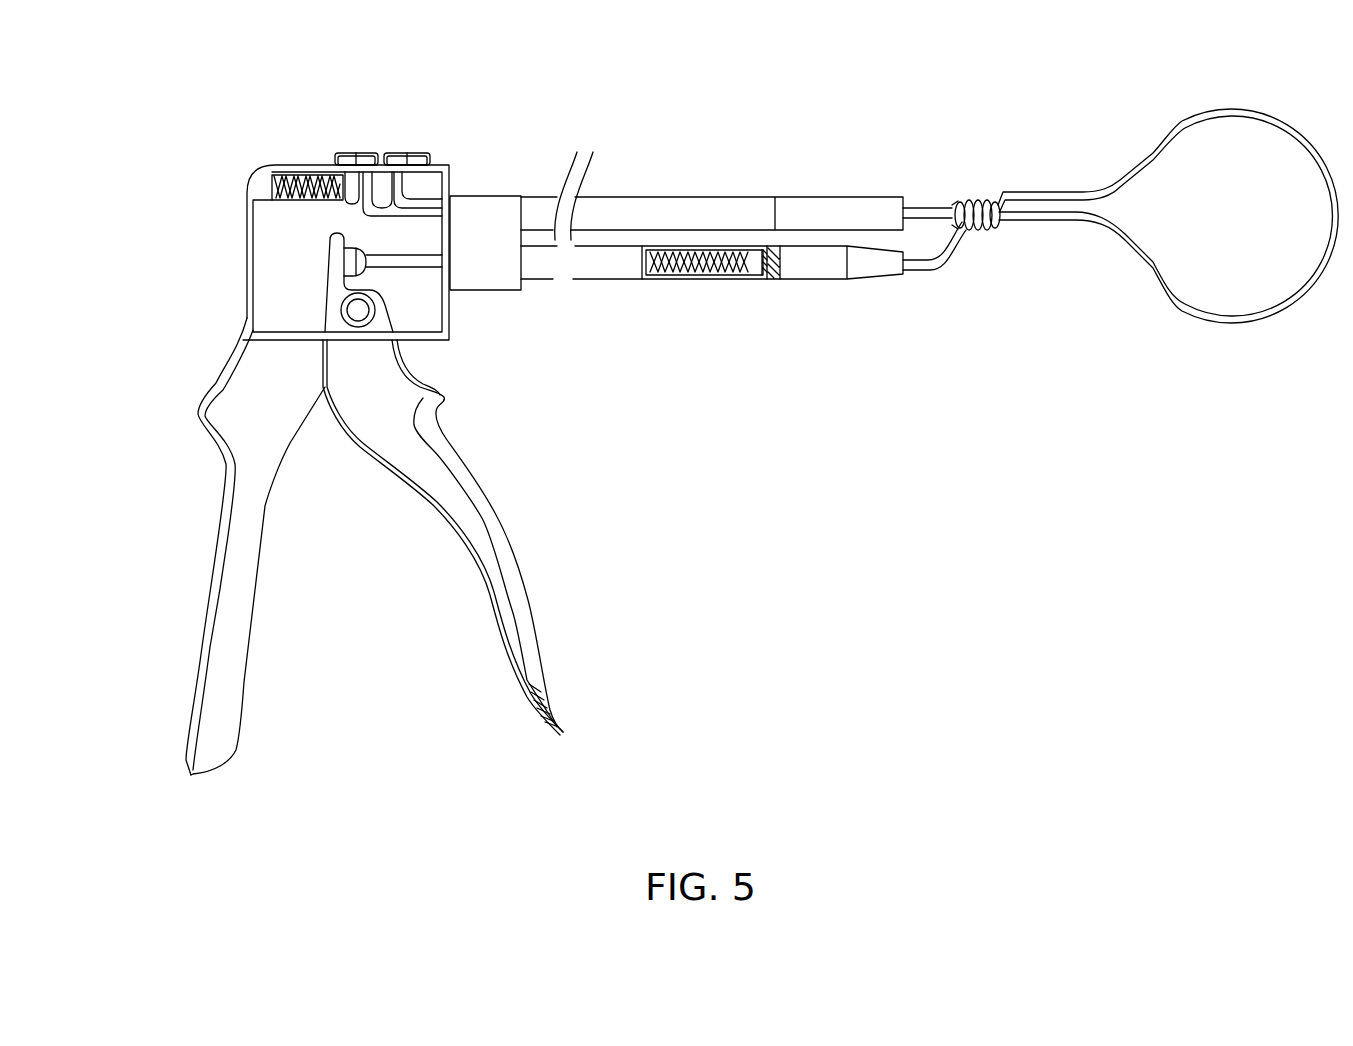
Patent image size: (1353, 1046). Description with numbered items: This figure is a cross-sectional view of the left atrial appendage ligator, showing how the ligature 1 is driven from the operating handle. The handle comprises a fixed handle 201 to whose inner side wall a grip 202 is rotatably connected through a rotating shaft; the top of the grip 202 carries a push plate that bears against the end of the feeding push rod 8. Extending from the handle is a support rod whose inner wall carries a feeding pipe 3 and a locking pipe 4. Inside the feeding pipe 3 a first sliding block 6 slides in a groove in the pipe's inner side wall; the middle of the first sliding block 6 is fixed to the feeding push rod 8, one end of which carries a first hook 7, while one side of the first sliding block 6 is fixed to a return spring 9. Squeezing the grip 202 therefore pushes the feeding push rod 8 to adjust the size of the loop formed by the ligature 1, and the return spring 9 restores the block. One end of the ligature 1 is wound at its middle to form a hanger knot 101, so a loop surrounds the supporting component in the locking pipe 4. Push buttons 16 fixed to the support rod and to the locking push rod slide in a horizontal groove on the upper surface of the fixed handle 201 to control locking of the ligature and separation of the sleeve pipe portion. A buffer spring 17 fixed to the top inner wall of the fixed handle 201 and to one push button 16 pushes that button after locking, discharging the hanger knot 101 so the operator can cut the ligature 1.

The ligature 1 is at (1113, 220).
The feeding pipe 3 is at (826, 265).
The locking pipe 4 is at (683, 208).
The first sliding block 6 is at (762, 263).
The first hook 7 is at (776, 262).
The feeding push rod 8 is at (700, 279).
The return spring 9 is at (655, 279).
The push button 16 is at (348, 158).
The buffer spring 17 is at (293, 201).
The hanger knot 101 is at (965, 212).
The fixed handle 201 is at (240, 540).
The grip 202 is at (493, 567).